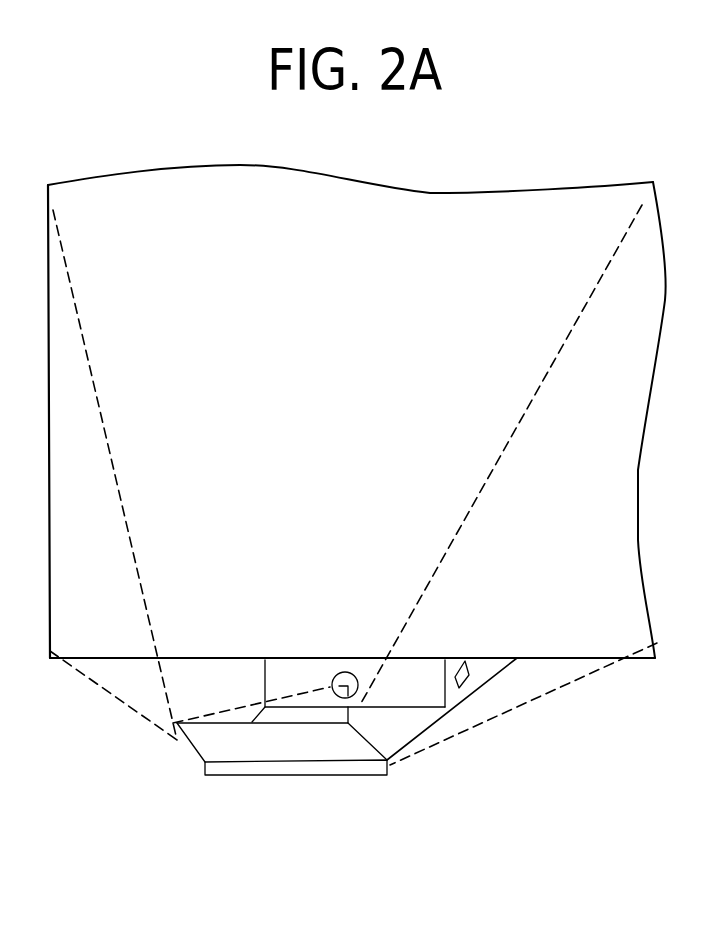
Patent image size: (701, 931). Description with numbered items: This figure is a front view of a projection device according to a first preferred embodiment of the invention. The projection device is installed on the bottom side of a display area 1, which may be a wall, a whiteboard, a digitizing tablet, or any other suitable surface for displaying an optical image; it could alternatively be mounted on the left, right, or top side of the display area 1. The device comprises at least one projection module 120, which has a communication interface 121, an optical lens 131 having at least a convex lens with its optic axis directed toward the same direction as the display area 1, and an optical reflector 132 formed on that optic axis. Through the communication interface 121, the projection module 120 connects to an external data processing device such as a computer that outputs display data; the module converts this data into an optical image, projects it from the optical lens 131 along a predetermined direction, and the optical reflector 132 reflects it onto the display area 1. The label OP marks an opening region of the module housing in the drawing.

The display area 1 is at (574, 207).
The projection module 120 is at (497, 664).
The communication interface 121 is at (459, 690).
The optical lens 131 is at (344, 672).
The optical reflector 132 is at (178, 742).
The opening OP is at (243, 707).